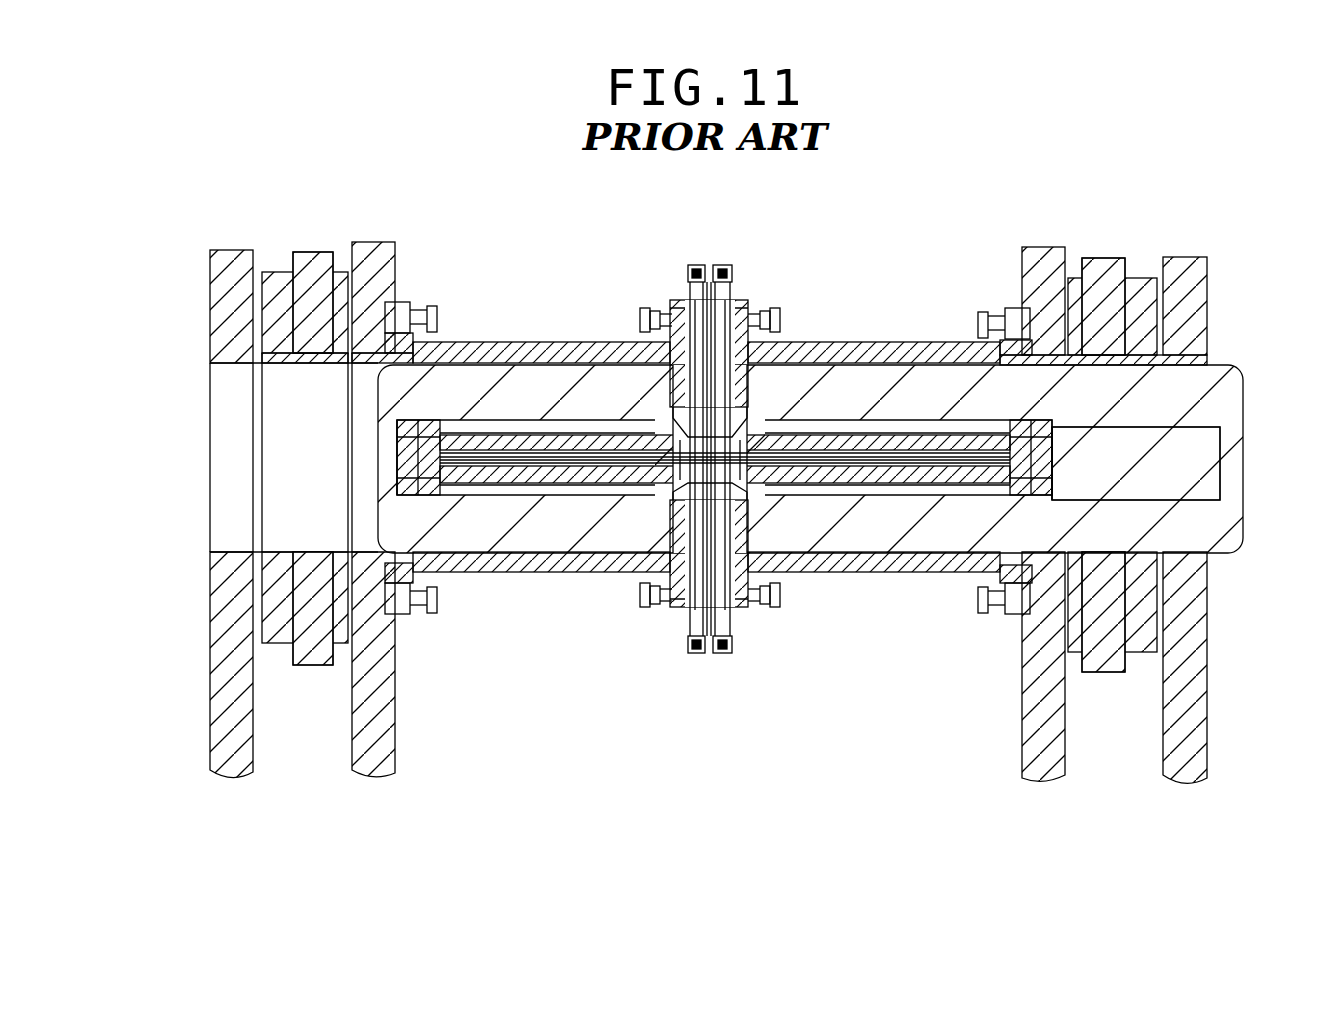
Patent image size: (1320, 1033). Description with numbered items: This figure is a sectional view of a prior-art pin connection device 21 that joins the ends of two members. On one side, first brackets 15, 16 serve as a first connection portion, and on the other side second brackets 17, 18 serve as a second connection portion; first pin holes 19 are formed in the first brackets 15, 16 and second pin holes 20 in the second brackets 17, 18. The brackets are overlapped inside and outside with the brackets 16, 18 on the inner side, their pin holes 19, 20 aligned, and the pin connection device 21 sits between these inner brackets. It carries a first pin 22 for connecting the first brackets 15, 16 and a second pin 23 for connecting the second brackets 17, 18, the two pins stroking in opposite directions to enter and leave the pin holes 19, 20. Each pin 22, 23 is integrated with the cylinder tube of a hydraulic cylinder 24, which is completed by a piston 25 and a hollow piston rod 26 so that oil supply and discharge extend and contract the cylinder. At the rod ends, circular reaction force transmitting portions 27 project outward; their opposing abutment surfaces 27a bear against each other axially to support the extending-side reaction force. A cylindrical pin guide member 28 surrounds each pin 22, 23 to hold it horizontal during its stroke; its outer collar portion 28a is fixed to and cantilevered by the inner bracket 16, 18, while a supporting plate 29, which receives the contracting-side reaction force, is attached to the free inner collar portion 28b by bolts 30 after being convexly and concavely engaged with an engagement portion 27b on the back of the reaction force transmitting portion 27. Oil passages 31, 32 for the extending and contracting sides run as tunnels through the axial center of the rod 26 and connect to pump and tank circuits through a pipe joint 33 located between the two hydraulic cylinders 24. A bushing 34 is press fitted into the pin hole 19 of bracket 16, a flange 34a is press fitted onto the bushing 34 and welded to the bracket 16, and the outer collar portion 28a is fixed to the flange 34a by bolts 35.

The first bracket 15 is at (315, 250).
The first bracket 16 is at (385, 242).
The second bracket 17 is at (1100, 258).
The second bracket 18 is at (1040, 247).
The first pin hole 19 is at (305, 370).
The second pin hole 20 is at (1108, 372).
The pin connection device 21 is at (768, 257).
The first pin 22 is at (560, 370).
The second pin 23 is at (1210, 530).
The hydraulic cylinder 24 is at (492, 352).
The piston 25 is at (400, 482).
The hollow piston rod 26 is at (497, 488).
The reaction force transmitting portion 27 is at (690, 440).
The abutment surface 27a is at (760, 483).
The engagement portion 27b is at (648, 500).
The pin guide member 28 is at (540, 575).
The outer collar portion 28a is at (415, 615).
The inner collar portion 28b is at (660, 612).
The supporting plate 29 is at (665, 367).
The bolt 30 is at (637, 320).
The oil passage 31 is at (445, 497).
The oil passage 32 is at (534, 432).
The pipe joint 33 is at (722, 262).
The bushing 34 is at (378, 353).
The flange 34a is at (398, 335).
The bolt 35 is at (418, 305).